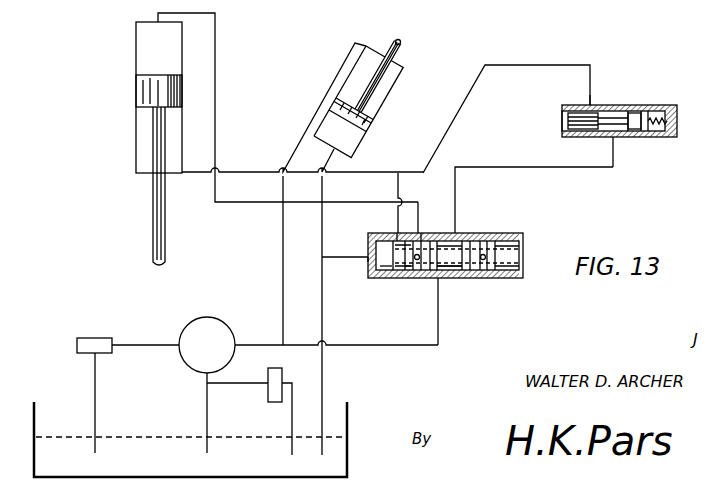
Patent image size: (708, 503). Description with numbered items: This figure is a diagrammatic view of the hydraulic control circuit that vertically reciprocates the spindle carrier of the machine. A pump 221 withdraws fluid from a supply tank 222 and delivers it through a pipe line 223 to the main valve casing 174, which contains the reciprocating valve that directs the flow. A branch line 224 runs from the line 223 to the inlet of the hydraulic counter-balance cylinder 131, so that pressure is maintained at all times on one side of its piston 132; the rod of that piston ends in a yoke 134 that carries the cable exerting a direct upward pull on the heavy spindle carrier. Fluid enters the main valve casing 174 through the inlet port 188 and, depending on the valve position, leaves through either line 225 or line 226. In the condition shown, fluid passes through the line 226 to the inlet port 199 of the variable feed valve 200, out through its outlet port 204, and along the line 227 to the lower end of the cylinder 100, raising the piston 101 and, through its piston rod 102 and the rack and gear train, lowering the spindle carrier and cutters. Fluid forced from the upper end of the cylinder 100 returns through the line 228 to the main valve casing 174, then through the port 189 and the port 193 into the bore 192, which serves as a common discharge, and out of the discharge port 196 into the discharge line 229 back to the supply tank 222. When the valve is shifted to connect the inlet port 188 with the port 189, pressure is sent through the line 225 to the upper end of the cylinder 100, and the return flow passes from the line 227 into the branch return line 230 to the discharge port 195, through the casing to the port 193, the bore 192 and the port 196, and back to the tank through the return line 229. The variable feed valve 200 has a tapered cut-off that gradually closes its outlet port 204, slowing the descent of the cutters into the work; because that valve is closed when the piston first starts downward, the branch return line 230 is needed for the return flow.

The cylinder 100 is at (136, 127).
The piston 101 is at (160, 87).
The piston rod 102 is at (165, 192).
The cylinder 131 is at (386, 92).
The piston 132 is at (380, 115).
The yoke 134 is at (400, 40).
The main valve casing 174 is at (488, 278).
The inlet port 188 is at (444, 278).
The outlet port 189 is at (422, 233).
The bore 192 is at (380, 278).
The port 193 is at (409, 278).
The discharge port 195 is at (397, 233).
The discharge port 196 is at (368, 264).
The inlet port 199 is at (613, 140).
The variable feed valve 200 is at (650, 137).
The outlet port 204 is at (592, 104).
The pump 221 is at (210, 330).
The supply tank 222 is at (332, 455).
The pipe line 223 is at (399, 324).
The branch line 224 is at (283, 303).
The line 225 is at (418, 207).
The line 226 is at (455, 206).
The line 227 is at (542, 65).
The line 228 is at (215, 98).
The discharge line 229 is at (322, 222).
The branch return line 230 is at (398, 183).